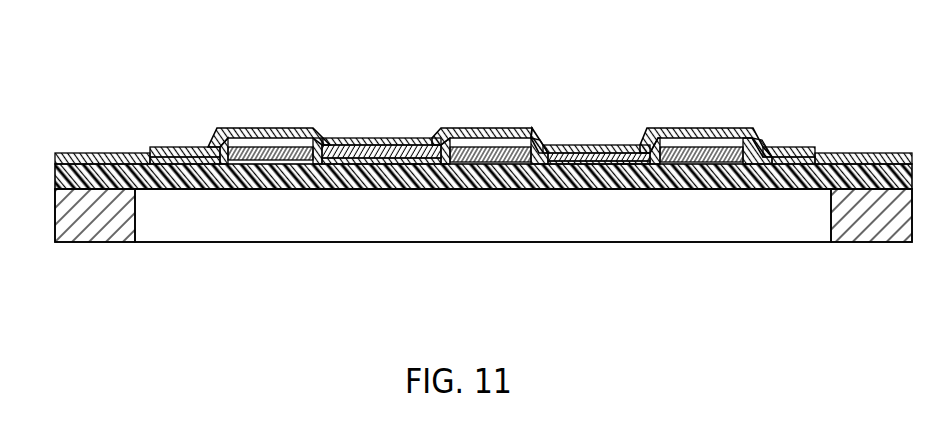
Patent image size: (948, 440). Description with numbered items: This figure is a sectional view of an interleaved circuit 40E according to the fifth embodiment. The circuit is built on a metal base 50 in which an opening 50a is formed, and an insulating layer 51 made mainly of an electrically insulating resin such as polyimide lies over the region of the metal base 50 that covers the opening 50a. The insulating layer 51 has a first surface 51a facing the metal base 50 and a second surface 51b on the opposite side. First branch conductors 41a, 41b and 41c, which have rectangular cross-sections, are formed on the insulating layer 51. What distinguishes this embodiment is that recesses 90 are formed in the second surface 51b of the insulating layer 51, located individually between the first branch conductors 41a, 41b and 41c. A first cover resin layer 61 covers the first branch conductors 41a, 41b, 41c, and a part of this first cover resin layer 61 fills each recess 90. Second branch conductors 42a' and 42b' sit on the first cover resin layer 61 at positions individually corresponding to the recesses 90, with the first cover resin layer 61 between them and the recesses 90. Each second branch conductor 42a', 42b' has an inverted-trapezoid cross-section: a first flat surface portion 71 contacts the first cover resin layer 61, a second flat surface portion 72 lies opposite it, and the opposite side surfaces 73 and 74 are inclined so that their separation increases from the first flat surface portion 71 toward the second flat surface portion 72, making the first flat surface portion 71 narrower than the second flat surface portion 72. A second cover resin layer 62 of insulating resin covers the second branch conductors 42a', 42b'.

The interleaved circuit 40E is at (725, 69).
The metal base 50 is at (107, 232).
The opening 50a is at (548, 232).
The insulating layer 51 is at (322, 176).
The first surface 51a is at (185, 190).
The second surface 51b is at (195, 157).
The first branch conductor 41a is at (259, 159).
The first branch conductor 41b is at (474, 161).
The first branch conductor 41c is at (697, 161).
The second branch conductor 42a' is at (381, 133).
The second branch conductor 42b' is at (599, 133).
The first flat surface portion 71 is at (362, 163).
The second flat surface portion 72 is at (363, 138).
The side surface 73 is at (318, 134).
The side surface 74 is at (441, 132).
The second cover resin layer 62 is at (498, 128).
The first cover resin layer 61 is at (437, 163).
The recess 90 is at (412, 166).